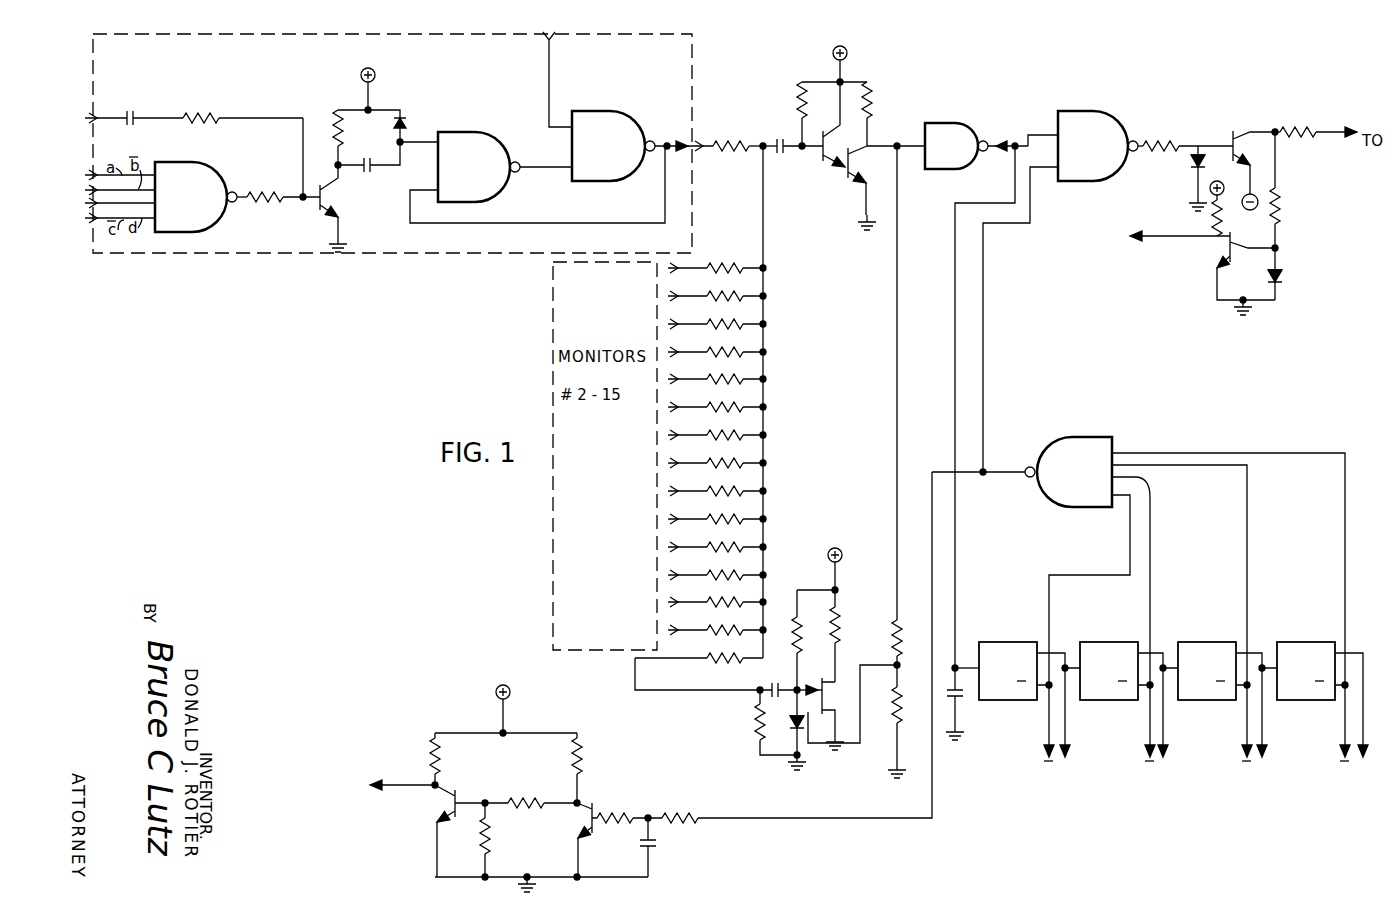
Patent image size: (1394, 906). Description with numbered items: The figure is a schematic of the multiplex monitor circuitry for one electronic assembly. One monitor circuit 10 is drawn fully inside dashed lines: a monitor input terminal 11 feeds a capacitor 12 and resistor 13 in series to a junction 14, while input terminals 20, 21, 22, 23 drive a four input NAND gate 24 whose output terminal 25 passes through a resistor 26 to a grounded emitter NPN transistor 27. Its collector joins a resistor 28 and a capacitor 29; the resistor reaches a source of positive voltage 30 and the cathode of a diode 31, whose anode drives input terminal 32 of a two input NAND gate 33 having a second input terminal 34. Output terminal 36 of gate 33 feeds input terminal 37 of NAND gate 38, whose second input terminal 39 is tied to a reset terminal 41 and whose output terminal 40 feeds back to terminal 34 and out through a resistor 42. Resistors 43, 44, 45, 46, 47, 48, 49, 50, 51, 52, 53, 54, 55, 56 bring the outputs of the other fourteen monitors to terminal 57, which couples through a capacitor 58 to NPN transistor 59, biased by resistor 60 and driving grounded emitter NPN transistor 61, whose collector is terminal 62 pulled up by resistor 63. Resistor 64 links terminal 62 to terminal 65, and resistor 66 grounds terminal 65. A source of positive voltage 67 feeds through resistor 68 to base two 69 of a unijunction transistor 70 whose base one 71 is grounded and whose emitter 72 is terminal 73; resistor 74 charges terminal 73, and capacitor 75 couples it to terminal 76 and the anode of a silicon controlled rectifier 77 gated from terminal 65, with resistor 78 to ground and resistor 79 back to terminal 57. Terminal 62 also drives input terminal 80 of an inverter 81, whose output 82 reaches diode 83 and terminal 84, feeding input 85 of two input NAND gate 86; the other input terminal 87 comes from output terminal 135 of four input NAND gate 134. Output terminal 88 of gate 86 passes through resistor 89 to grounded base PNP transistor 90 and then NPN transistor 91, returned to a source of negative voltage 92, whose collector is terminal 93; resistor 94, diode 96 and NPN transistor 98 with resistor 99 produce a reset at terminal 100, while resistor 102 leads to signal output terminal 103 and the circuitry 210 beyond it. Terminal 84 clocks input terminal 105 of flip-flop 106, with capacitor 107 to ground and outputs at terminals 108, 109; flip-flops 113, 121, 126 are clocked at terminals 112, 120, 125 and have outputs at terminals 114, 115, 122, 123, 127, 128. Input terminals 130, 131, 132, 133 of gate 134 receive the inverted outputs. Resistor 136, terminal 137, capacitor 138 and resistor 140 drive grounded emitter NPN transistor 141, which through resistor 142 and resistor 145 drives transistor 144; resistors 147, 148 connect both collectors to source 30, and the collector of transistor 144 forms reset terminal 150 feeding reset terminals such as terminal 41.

The monitor circuit 10 is at (696, 58).
The monitor input terminal 11 is at (88, 117).
The capacitor 12 is at (126, 112).
The resistor 13 is at (187, 116).
The junction 14 is at (302, 198).
The input terminal 20 is at (92, 176).
The input terminal 21 is at (91, 189).
The input terminal 22 is at (91, 204).
The input terminal 23 is at (92, 218).
The four input NAND gate 24 is at (178, 162).
The output terminal 25 is at (237, 193).
The resistor 26 is at (266, 193).
The grounded emitter NPN transistor 27 is at (337, 208).
The resistor 28 is at (340, 144).
The capacitor 29 is at (371, 168).
The source of positive voltage 30 is at (374, 72).
The diode 31 is at (414, 120).
The input terminal 32 is at (438, 134).
The two input NAND gate 33 is at (474, 133).
The second input terminal 34 is at (436, 190).
The output terminal 36 is at (521, 163).
The input terminal 37 is at (562, 171).
The NAND gate 38 is at (603, 110).
The second input terminal 39 is at (572, 126).
The output terminal 40 is at (654, 140).
The reset terminal 41 is at (545, 30).
The resistor 42 is at (738, 140).
The resistor 43 is at (723, 264).
The resistor 44 is at (719, 292).
The resistor 45 is at (719, 320).
The resistor 46 is at (719, 348).
The resistor 47 is at (719, 375).
The resistor 48 is at (719, 403).
The resistor 49 is at (719, 431).
The resistor 50 is at (719, 459).
The resistor 51 is at (719, 487).
The resistor 52 is at (719, 515).
The resistor 53 is at (719, 543).
The resistor 54 is at (719, 571).
The resistor 55 is at (719, 598).
The resistor 56 is at (719, 626).
The terminal 57 is at (764, 140).
The capacitor 58 is at (784, 152).
The NPN transistor 59 is at (836, 126).
The resistor 60 is at (804, 110).
The grounded emitter NPN transistor 61 is at (862, 188).
The terminal 62 is at (896, 140).
The resistor 63 is at (872, 104).
The resistor 64 is at (895, 621).
The terminal 65 is at (894, 662).
The resistor 66 is at (900, 702).
The source of positive voltage 67 is at (838, 548).
The resistor 68 is at (839, 632).
The base two 69 is at (822, 686).
The unijunction transistor 70 is at (839, 714).
The base one 71 is at (834, 740).
The emitter 72 is at (794, 716).
The terminal 73 is at (799, 689).
The resistor 74 is at (796, 636).
The capacitor 75 is at (780, 682).
The terminal 76 is at (758, 690).
The silicon controlled rectifier 77 is at (780, 732).
The resistor 78 is at (757, 721).
The resistor 79 is at (719, 654).
The input terminal 80 is at (935, 114).
The inverter 81 is at (950, 122).
The output 82 is at (997, 139).
The diode 83 is at (1004, 164).
The terminal 84 is at (1017, 138).
The input 85 is at (1046, 167).
The two input NAND gate 86 is at (1096, 112).
The input terminal 87 is at (1062, 181).
The output terminal 88 is at (1139, 141).
The resistor 89 is at (1164, 142).
The grounded base PNP transistor 90 is at (1193, 176).
The NPN transistor 91 is at (1254, 162).
The source of negative voltage 92 is at (1249, 210).
The terminal 93 is at (1274, 129).
The resistor 94 is at (1282, 222).
The diode 96 is at (1290, 276).
The NPN transistor 98 is at (1222, 257).
The resistor 99 is at (1207, 216).
The terminal 100 is at (1127, 234).
The resistor 102 is at (1306, 129).
The signal output terminal 103 is at (1360, 128).
The clock or input terminal 105 is at (970, 666).
The bistable multivibrator or flip-flop 106 is at (992, 642).
The capacitor 107 is at (960, 698).
The terminal 108 is at (1068, 685).
The terminal 109 is at (1046, 702).
The clock or input terminal 112 is at (1074, 668).
The bistable multivibrator or flip-flop 113 is at (1094, 642).
The terminal 114 is at (1166, 685).
The terminal 115 is at (1145, 702).
The clock or input terminal 120 is at (1169, 668).
The bistable multivibrator or flip-flop 121 is at (1192, 642).
The terminal 122 is at (1263, 685).
The terminal 123 is at (1243, 702).
The clock or input terminal 125 is at (1266, 668).
The bistable multivibrator or flip-flop 126 is at (1292, 642).
The Q output 127 is at (1361, 708).
The terminal 128 is at (1343, 704).
The input terminal 130 is at (1110, 511).
The input terminal 131 is at (1122, 479).
The input terminal 132 is at (1125, 466).
The input terminal 133 is at (1118, 453).
The four input NAND gate 134 is at (1062, 437).
The output terminal 135 is at (1014, 466).
The resistor 136 is at (680, 814).
The terminal 137 is at (650, 812).
The capacitor 138 is at (653, 848).
The resistor 140 is at (616, 814).
The grounded emitter NPN transistor 141 is at (586, 828).
The resistor 142 is at (523, 799).
The grounded emitter NPN transistor 144 is at (443, 811).
The resistor 145 is at (492, 852).
The resistor 147 is at (443, 758).
The resistor 148 is at (581, 756).
The reset terminal 150 is at (364, 786).
The circuit 210 is at (1368, 159).